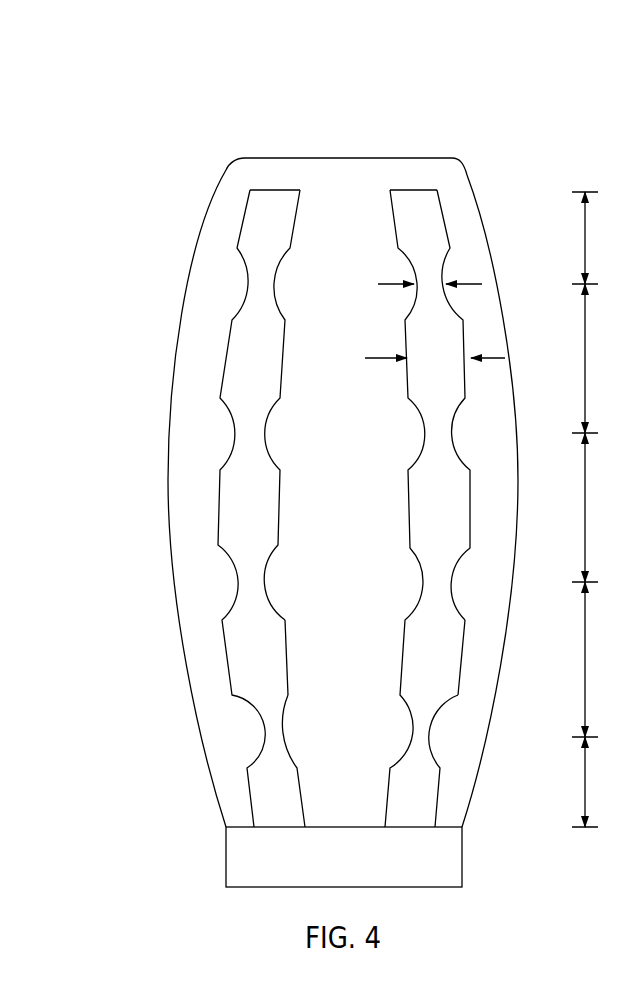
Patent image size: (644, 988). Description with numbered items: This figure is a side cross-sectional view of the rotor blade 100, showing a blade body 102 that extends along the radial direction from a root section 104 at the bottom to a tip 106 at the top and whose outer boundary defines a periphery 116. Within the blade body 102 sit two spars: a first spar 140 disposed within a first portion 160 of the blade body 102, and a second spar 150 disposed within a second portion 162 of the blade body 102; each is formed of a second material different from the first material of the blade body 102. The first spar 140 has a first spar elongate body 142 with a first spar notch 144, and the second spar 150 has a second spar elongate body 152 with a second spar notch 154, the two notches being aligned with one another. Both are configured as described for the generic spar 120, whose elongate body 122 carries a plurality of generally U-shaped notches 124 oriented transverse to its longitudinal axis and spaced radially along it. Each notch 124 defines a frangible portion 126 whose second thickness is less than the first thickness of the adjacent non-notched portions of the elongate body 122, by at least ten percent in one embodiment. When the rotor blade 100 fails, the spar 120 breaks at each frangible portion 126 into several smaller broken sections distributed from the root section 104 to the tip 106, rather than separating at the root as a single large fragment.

The rotor blade 100 is at (208, 80).
The blade body 102 is at (479, 193).
The root section 104 is at (463, 860).
The tip 106 is at (336, 158).
The periphery 116 is at (468, 790).
The spar 120 is at (286, 454).
The elongate body 122 is at (288, 648).
The notch 124 is at (234, 283).
The frangible portion 126 is at (271, 283).
The first spar 140 is at (272, 190).
The first spar elongate body 142 is at (263, 362).
The first spar notch 144 is at (163, 508).
The second spar 150 is at (410, 190).
The second spar elongate body 152 is at (453, 388).
The second spar notch 154 is at (400, 263).
The first portion 160 is at (237, 195).
The second portion 162 is at (447, 183).